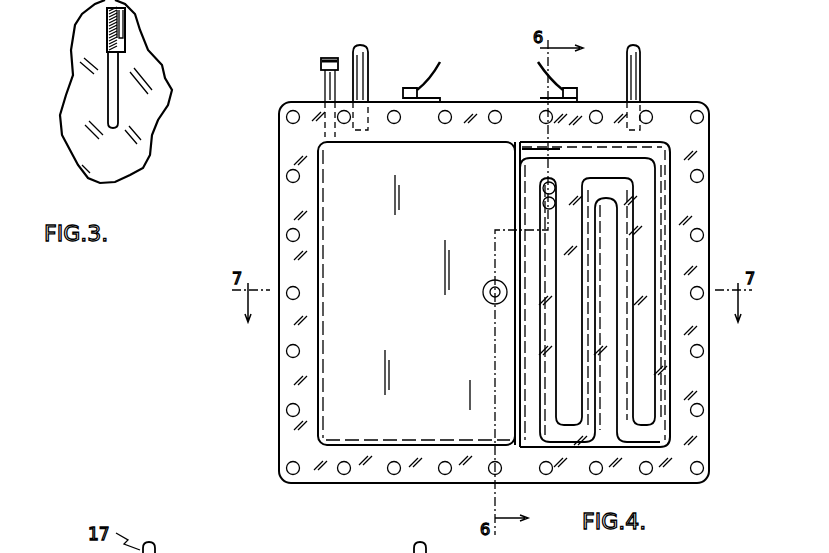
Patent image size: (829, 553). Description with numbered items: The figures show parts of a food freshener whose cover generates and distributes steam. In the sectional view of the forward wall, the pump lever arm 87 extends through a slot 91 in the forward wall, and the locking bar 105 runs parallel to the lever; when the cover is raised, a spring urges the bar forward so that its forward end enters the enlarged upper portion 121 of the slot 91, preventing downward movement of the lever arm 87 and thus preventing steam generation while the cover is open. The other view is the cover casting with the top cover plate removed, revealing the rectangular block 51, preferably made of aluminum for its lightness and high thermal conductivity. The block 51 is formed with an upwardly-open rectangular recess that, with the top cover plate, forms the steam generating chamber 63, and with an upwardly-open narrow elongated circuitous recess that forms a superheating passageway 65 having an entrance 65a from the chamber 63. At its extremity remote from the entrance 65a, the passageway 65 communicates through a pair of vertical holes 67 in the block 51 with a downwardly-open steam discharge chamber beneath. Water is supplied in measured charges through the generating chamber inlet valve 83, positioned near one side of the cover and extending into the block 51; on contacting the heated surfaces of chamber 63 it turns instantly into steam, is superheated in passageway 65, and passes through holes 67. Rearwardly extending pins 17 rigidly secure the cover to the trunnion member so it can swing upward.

In FIG. 4, the rearwardly extending pins 17 is at (362, 45).
In FIG. 4, the rectangular block 51 is at (710, 366).
In FIG. 4, the steam generating chamber 63 is at (402, 296).
In FIG. 4, the superheating passageway 65 is at (660, 207).
In FIG. 4, the entrance 65a is at (520, 148).
In FIG. 4, the vertical holes 67 is at (543, 190).
In FIG. 4, the generating chamber inlet valve 83 is at (325, 90).
In FIG. 3, the lever arm 87 is at (112, 34).
In FIG. 3, the slot 91 is at (108, 78).
In FIG. 3, the locking bar 105 is at (126, 22).
In FIG. 3, the enlarged upper portion 121 is at (122, 38).